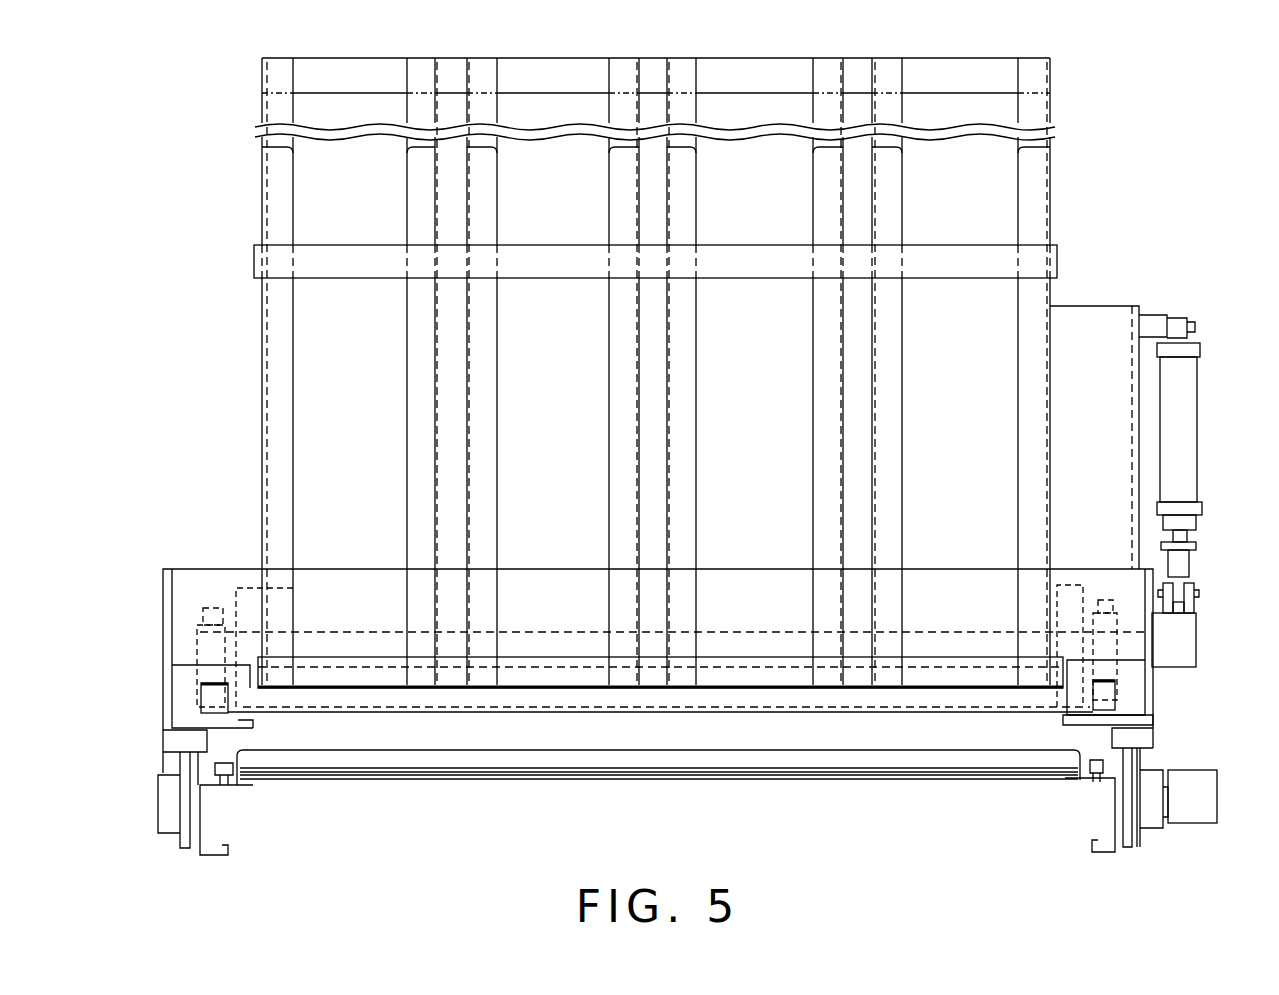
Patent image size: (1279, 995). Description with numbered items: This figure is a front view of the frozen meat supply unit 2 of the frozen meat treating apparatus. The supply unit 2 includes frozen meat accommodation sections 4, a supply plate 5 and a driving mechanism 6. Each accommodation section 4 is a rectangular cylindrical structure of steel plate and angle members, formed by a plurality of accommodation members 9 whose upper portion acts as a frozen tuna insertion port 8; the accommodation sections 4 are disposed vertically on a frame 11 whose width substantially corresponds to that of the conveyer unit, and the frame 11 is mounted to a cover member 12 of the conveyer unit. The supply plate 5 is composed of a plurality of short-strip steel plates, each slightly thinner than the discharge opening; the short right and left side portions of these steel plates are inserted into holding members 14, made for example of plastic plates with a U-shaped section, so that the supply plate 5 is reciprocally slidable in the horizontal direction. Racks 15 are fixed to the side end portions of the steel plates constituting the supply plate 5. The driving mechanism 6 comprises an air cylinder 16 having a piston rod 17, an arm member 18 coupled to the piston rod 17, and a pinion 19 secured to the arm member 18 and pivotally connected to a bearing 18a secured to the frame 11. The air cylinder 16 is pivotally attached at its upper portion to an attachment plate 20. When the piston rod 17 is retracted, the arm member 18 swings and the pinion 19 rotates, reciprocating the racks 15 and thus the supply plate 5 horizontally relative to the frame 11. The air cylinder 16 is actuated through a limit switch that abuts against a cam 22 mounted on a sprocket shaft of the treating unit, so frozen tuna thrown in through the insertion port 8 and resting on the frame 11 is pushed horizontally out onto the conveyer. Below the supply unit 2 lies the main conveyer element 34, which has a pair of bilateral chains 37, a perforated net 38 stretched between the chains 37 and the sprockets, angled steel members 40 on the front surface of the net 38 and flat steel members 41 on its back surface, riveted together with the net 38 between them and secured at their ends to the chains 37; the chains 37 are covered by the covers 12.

The frozen meat supply unit 2 is at (1063, 141).
The frozen meat accommodation section 4 is at (1060, 237).
The supply plate 5 is at (345, 690).
The driving mechanism 6 is at (1212, 352).
The frozen tuna insertion port 8 is at (975, 215).
The accommodation member 9 is at (278, 108).
The frame 11 is at (240, 730).
The cover member 12 is at (180, 742).
The holding member 14 is at (185, 683).
The rack 15 is at (210, 703).
The air cylinder 16 is at (1178, 465).
The piston rod 17 is at (1182, 568).
The arm member 18 is at (1192, 608).
The bearing 18a is at (250, 602).
The pinion 19 is at (215, 625).
The attachment plate 20 is at (1092, 328).
The cam 22 is at (1183, 817).
The main conveyer element 34 is at (447, 780).
The chain 37 is at (225, 786).
The net 38 is at (580, 768).
The angled steel member 40 is at (712, 762).
The flat steel member 41 is at (828, 776).